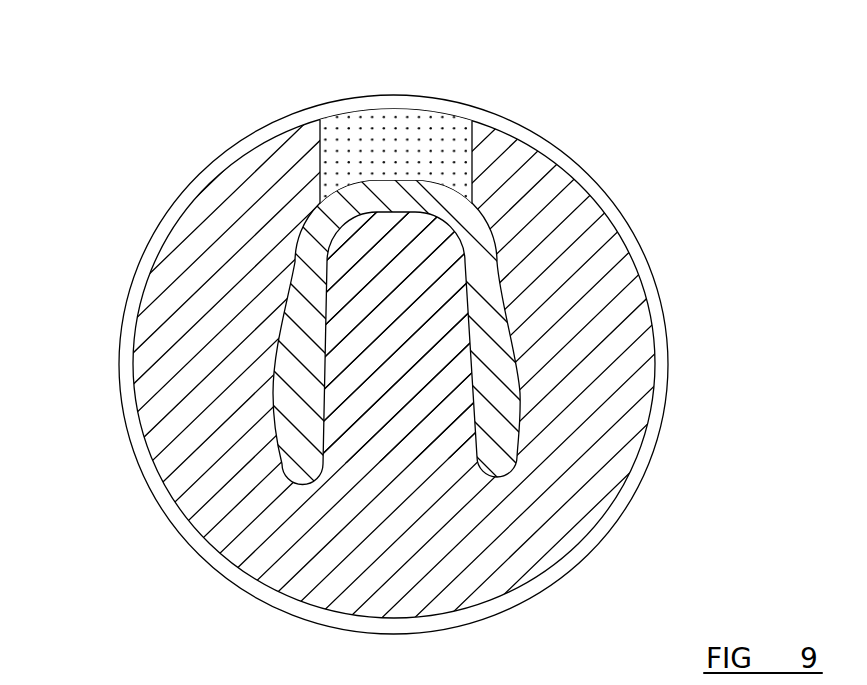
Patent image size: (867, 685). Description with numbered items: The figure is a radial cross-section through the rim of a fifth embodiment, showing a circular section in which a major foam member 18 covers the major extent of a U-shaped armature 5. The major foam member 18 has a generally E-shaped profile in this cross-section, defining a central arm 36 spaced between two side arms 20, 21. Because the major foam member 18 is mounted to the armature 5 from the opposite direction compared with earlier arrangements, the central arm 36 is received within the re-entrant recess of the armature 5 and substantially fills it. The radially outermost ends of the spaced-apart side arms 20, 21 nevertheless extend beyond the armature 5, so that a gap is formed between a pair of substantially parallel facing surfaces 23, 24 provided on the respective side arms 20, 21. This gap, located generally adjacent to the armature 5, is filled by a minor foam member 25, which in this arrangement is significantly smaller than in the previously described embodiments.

The armature 5 is at (478, 238).
The major foam member 18 is at (598, 298).
The side arm 20 is at (552, 182).
The side arm 21 is at (272, 172).
The facing surface 23 is at (472, 158).
The facing surface 24 is at (320, 160).
The minor foam member 25 is at (380, 137).
The central arm 36 is at (387, 285).